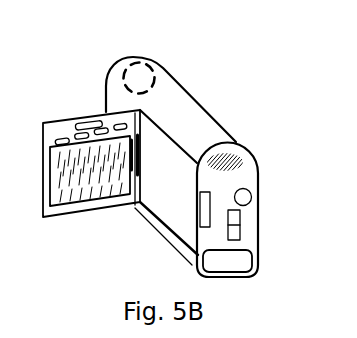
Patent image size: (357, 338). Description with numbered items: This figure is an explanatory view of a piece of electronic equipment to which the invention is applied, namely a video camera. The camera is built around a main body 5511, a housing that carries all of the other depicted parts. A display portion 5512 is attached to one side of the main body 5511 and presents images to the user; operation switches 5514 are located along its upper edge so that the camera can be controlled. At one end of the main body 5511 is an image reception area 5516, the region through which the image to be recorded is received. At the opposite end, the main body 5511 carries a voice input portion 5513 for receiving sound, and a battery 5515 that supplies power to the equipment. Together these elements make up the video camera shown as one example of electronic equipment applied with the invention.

The main body 5511 is at (177, 104).
The display portion 5512 is at (85, 191).
The voice input portion 5513 is at (233, 158).
The operation switches 5514 is at (59, 136).
The battery 5515 is at (221, 261).
The image reception area 5516 is at (133, 59).